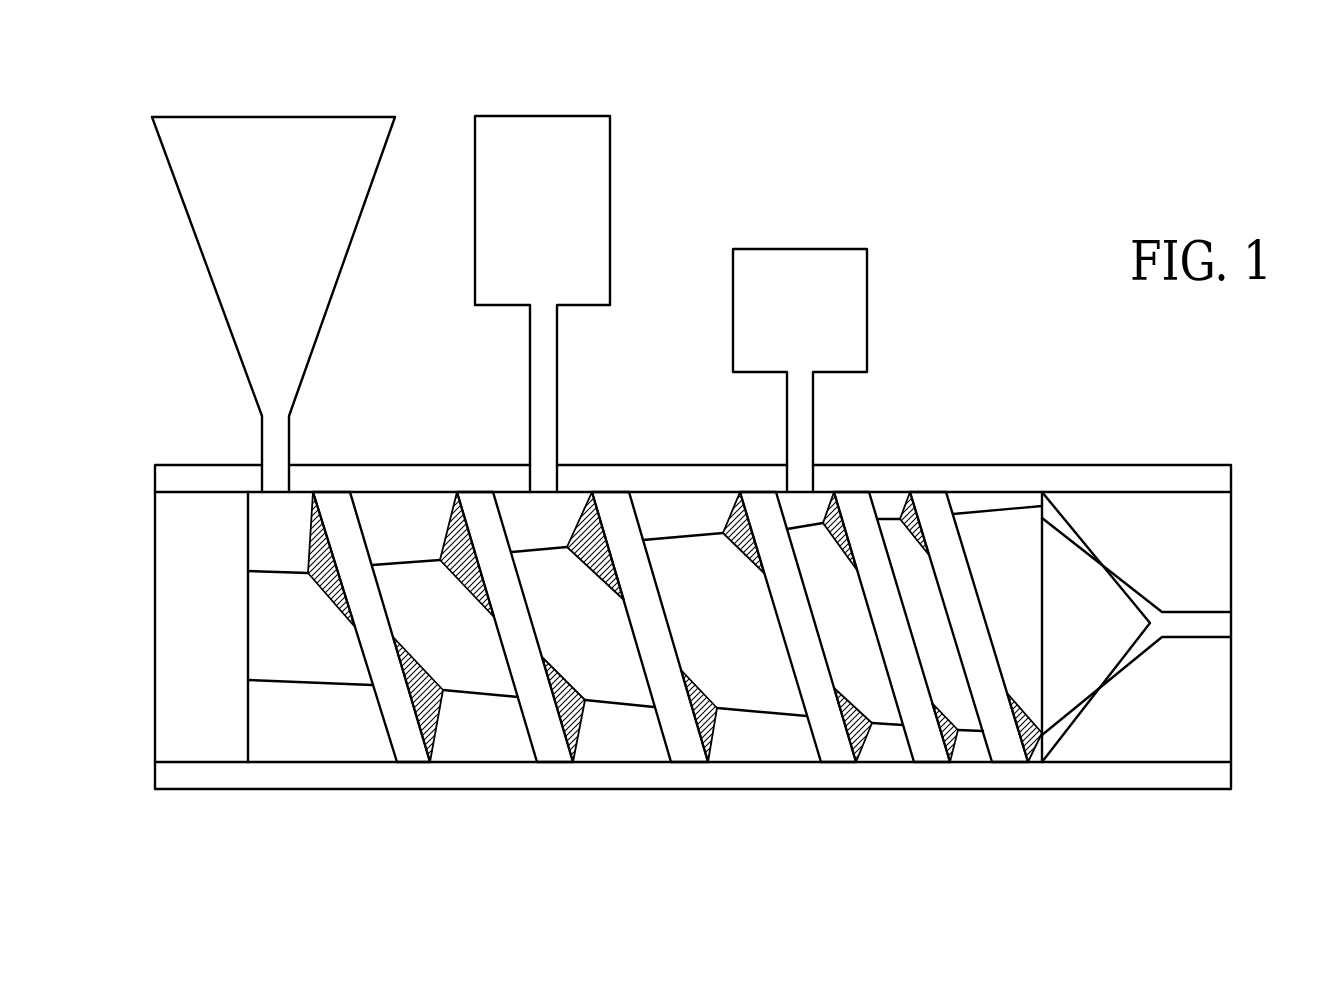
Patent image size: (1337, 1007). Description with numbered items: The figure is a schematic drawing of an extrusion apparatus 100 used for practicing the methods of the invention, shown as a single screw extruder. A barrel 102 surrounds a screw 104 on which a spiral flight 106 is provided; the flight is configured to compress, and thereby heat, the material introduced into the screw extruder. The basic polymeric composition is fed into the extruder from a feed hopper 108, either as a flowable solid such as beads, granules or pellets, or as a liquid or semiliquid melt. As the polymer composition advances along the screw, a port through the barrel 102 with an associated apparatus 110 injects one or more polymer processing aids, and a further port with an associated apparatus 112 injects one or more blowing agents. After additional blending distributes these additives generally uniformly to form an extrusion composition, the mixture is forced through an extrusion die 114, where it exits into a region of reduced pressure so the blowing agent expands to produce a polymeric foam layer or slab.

The extrusion apparatus 100 is at (1155, 88).
The barrel 102 is at (318, 466).
The screw 104 is at (695, 574).
The spiral flight 106 is at (507, 535).
The feed hopper 108 is at (357, 178).
The polymer processing aid injecting apparatus 110 is at (590, 223).
The blowing agent injecting apparatus 112 is at (853, 303).
The extrusion die 114 is at (1148, 545).